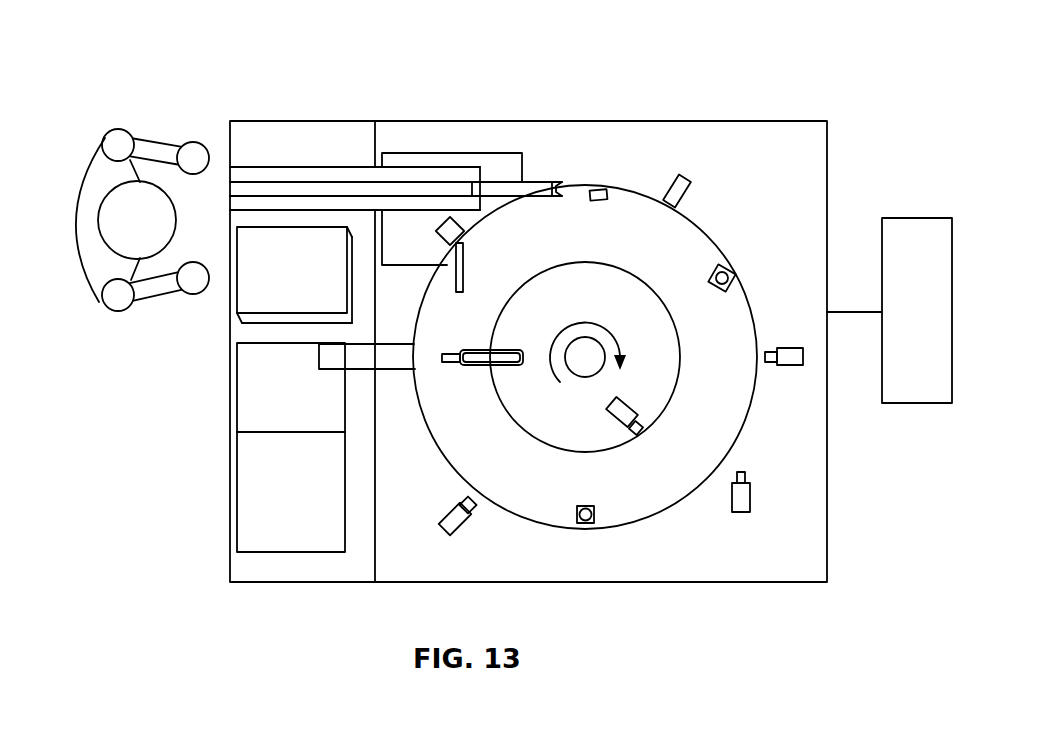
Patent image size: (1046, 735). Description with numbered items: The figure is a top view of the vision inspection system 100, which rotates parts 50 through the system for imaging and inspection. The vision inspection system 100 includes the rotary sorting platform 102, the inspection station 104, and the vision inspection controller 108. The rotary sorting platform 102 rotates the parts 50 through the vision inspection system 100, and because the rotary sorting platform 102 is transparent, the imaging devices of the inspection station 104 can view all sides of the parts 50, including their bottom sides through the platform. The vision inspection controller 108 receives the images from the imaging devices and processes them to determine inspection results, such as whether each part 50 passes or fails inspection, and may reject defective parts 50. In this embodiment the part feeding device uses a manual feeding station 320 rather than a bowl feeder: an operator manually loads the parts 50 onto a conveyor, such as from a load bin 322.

The vision inspection system 100 is at (712, 53).
The rotary sorting platform 102 is at (765, 218).
The inspection station 104 is at (787, 438).
The vision inspection controller 108 is at (918, 218).
The part 50 is at (598, 190).
The manual feeding station 320 is at (85, 138).
The load bin 322 is at (252, 297).